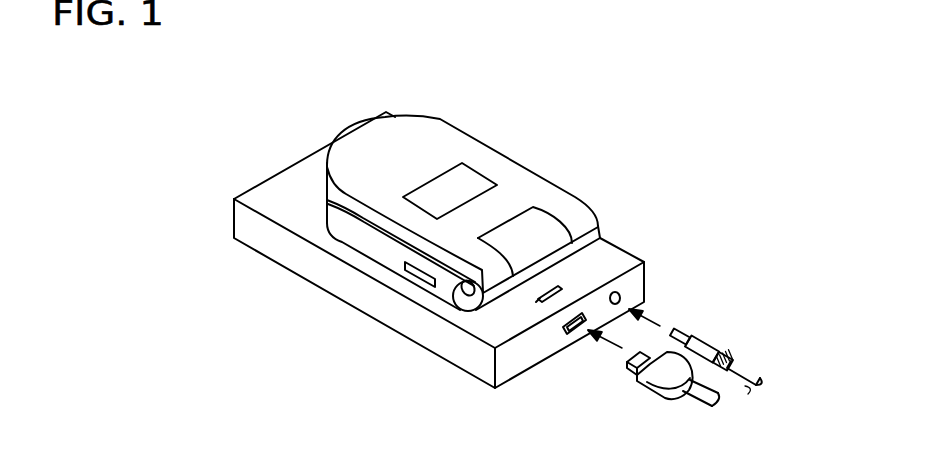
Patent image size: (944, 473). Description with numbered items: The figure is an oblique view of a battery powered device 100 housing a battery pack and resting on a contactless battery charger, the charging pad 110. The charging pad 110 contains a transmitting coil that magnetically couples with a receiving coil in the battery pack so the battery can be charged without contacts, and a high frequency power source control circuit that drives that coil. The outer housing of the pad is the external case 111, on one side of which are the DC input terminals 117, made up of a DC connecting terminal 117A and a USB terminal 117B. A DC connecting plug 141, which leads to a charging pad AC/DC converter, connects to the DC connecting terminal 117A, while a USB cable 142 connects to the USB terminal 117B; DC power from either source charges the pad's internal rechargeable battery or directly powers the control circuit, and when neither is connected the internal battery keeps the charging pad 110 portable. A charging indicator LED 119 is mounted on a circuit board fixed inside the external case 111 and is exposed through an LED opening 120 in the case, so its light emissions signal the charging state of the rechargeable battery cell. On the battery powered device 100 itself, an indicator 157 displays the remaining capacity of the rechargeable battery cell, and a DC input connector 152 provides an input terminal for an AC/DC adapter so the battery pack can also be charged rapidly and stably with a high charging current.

The battery powered device 100 is at (479, 203).
The charging pad 110 is at (444, 238).
The external case 111 is at (272, 190).
The DC input terminals 117 is at (648, 219).
The DC connecting terminal 117A is at (616, 292).
The USB terminal 117B is at (573, 312).
The charging indicator LED 119 is at (548, 300).
The LED opening 120 is at (538, 297).
The DC connecting plug 141 is at (683, 326).
The USB cable 142 is at (637, 404).
The DC input connector 152 is at (415, 272).
The indicator 157 is at (442, 188).